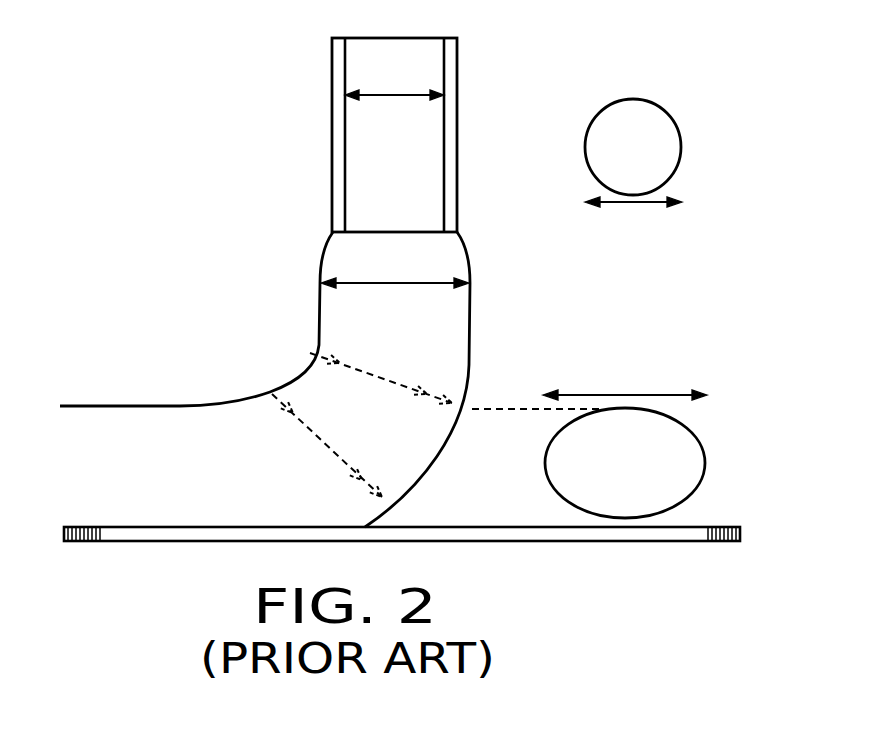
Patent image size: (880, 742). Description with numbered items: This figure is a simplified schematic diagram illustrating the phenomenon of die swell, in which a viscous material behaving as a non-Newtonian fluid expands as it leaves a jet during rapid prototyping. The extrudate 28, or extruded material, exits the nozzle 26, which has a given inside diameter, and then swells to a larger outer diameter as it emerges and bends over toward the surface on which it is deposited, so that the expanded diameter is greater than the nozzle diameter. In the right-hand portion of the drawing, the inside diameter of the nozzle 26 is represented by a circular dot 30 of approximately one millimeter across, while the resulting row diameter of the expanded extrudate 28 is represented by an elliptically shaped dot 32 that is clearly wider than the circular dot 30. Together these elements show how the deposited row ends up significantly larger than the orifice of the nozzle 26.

The nozzle 26 is at (459, 82).
The extrudate 28 is at (311, 340).
The circular dot 30 is at (655, 101).
The elliptically shaped dot 32 is at (697, 437).